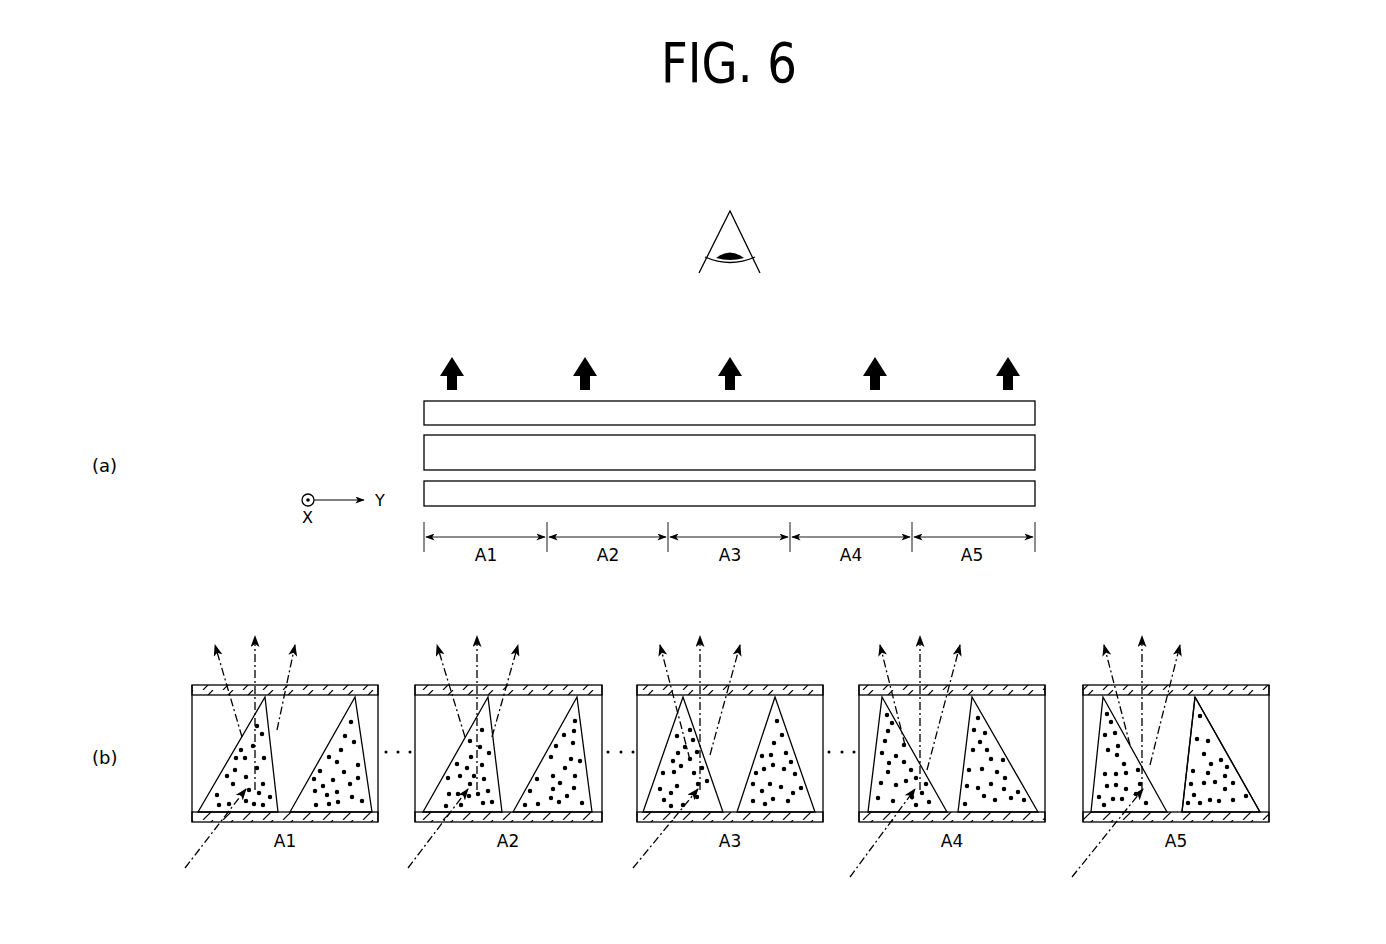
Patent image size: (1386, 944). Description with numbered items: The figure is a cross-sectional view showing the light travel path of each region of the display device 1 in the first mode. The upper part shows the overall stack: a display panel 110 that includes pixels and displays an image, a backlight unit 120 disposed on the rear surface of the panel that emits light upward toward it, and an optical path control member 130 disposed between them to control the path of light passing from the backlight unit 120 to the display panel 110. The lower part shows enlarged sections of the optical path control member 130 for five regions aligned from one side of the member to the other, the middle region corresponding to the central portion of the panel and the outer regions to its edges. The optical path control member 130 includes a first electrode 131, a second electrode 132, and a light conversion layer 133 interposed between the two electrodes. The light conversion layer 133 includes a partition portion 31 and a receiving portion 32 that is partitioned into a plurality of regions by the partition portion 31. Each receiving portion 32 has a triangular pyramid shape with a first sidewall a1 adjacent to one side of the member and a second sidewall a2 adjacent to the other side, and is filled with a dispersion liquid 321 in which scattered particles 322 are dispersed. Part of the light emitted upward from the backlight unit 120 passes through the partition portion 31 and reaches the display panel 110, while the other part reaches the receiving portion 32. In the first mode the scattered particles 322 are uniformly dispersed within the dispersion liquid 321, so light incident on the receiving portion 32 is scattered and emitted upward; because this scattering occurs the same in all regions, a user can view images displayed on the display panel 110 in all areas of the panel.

The display device 1 is at (775, 408).
The display panel 110 is at (1036, 411).
The backlight unit 120 is at (1036, 493).
The optical path control member 130 is at (1036, 453).
The first electrode 131 is at (1258, 822).
The second electrode 132 is at (1253, 691).
The light conversion layer 133 is at (789, 754).
The partition portion 31 is at (1254, 770).
The receiving portion 32 is at (1256, 754).
The dispersion liquid 321 is at (1212, 711).
The scattered particles 322 is at (1222, 740).
The first sidewall a1 is at (230, 752).
The second sidewall a2 is at (368, 793).